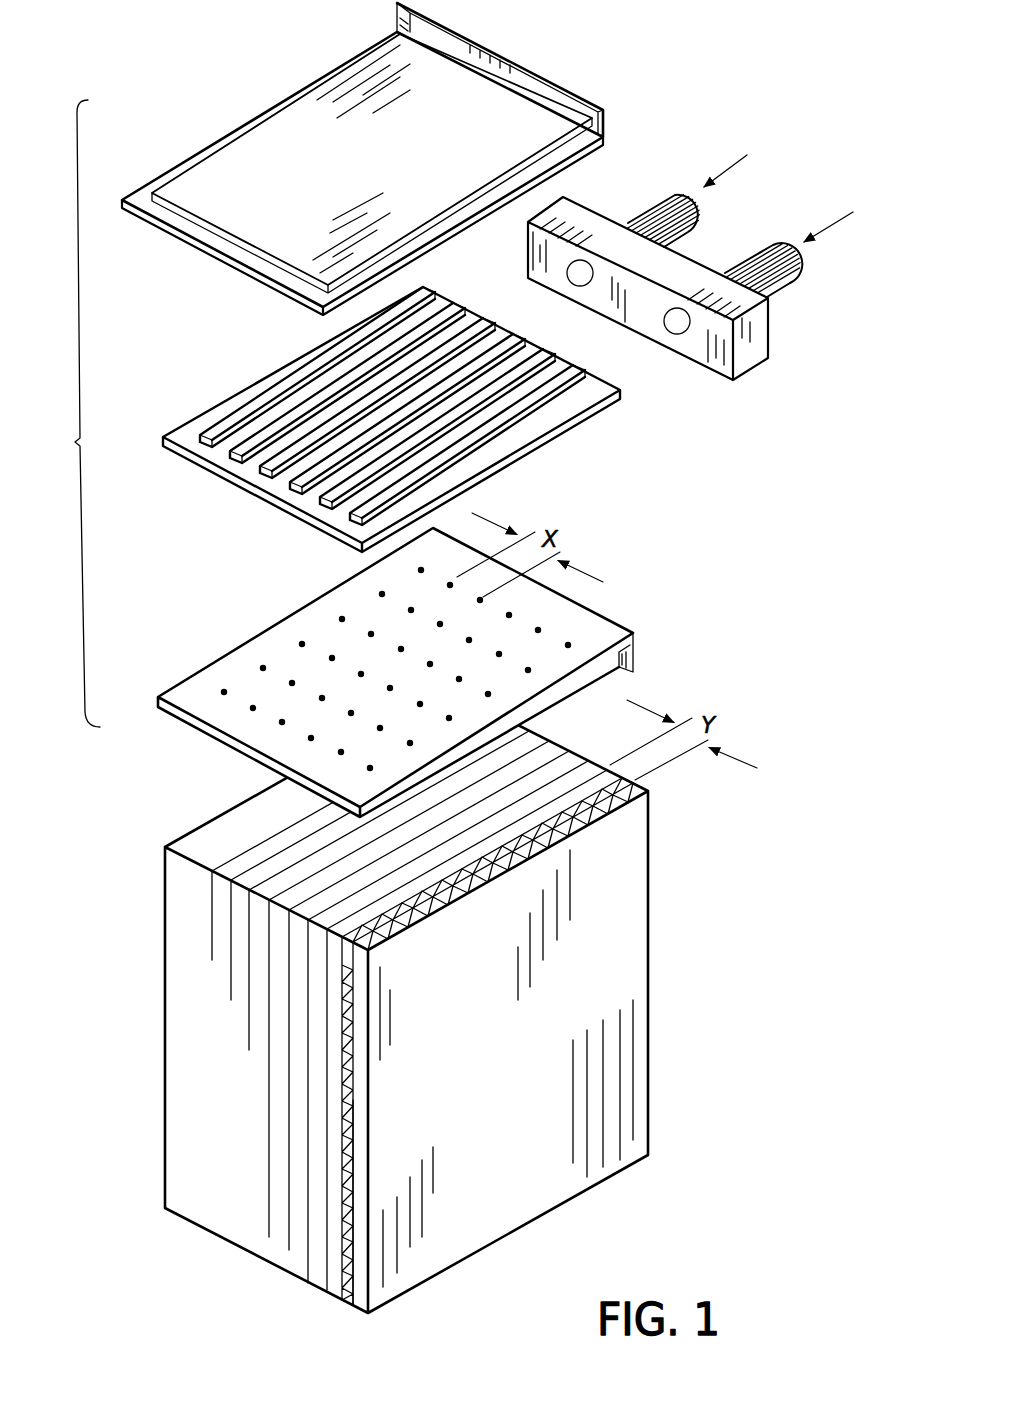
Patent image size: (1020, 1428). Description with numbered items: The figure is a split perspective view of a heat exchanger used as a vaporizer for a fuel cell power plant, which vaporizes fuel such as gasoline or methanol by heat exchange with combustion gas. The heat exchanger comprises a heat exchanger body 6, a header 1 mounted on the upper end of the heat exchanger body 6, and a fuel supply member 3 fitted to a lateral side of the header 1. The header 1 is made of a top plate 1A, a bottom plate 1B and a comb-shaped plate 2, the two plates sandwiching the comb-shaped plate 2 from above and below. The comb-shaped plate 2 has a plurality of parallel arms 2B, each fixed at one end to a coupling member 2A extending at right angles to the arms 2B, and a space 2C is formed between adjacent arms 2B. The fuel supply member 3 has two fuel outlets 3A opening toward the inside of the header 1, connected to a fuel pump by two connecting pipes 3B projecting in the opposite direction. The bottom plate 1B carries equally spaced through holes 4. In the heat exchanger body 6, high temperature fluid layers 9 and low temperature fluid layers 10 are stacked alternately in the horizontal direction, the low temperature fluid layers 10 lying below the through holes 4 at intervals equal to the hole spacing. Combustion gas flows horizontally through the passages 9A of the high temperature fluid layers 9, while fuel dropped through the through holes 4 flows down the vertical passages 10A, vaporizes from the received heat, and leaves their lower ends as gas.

The header 1 is at (78, 413).
The top plate 1A is at (275, 155).
The bottom plate 1B is at (418, 672).
The comb-shaped plate 2 is at (413, 419).
The coupling member 2A is at (272, 488).
The arms 2B is at (543, 358).
The space 2C is at (602, 379).
The fuel supply member 3 is at (662, 262).
The fuel outlets 3A is at (572, 275).
The connecting pipes 3B is at (657, 207).
The through holes 4 is at (263, 667).
The heat exchanger body 6 is at (406, 1019).
The high temperature fluid layers 9 is at (430, 888).
The horizontal passages 9A is at (343, 1233).
The low temperature fluid layers 10 is at (358, 1295).
The vertical passages 10A is at (578, 793).